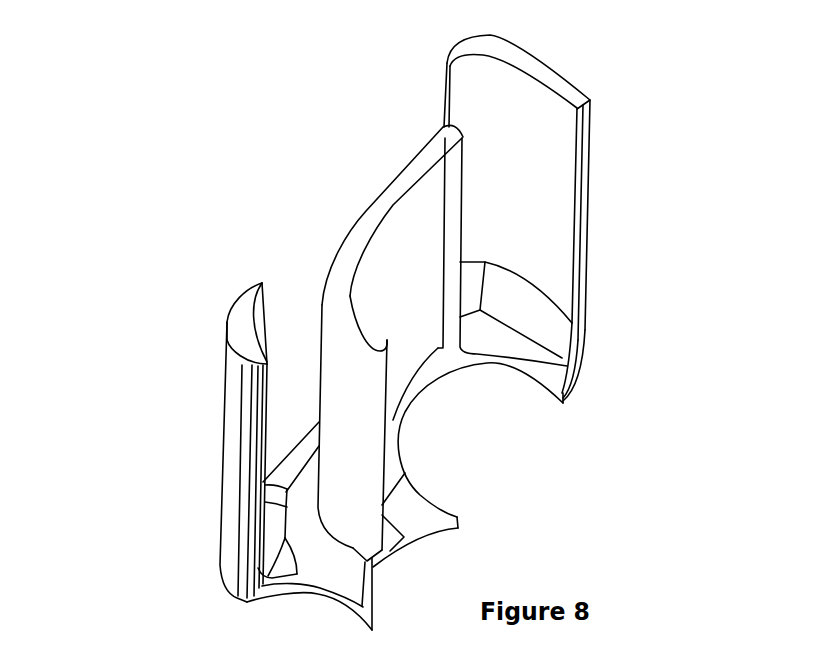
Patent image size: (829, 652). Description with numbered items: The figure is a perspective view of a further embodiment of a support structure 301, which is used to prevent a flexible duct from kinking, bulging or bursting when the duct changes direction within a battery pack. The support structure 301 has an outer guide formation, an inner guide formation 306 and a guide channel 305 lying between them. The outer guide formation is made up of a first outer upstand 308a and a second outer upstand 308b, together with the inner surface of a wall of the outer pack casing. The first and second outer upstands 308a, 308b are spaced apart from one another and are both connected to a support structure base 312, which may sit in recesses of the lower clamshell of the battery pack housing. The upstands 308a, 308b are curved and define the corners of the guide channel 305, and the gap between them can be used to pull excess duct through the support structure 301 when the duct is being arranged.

The support structure 301 is at (222, 370).
The guide channel 305 is at (277, 288).
The inner guide formation 306 is at (373, 218).
The first outer upstand 308a is at (229, 468).
The second outer upstand 308b is at (537, 68).
The support structure base 312 is at (565, 383).